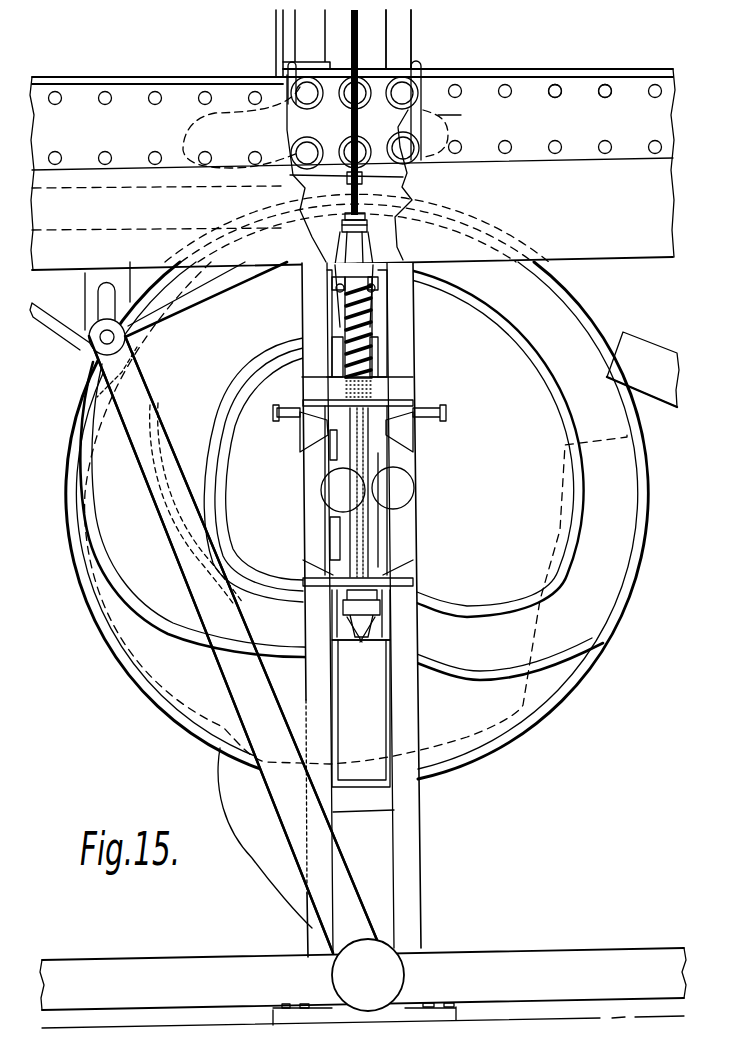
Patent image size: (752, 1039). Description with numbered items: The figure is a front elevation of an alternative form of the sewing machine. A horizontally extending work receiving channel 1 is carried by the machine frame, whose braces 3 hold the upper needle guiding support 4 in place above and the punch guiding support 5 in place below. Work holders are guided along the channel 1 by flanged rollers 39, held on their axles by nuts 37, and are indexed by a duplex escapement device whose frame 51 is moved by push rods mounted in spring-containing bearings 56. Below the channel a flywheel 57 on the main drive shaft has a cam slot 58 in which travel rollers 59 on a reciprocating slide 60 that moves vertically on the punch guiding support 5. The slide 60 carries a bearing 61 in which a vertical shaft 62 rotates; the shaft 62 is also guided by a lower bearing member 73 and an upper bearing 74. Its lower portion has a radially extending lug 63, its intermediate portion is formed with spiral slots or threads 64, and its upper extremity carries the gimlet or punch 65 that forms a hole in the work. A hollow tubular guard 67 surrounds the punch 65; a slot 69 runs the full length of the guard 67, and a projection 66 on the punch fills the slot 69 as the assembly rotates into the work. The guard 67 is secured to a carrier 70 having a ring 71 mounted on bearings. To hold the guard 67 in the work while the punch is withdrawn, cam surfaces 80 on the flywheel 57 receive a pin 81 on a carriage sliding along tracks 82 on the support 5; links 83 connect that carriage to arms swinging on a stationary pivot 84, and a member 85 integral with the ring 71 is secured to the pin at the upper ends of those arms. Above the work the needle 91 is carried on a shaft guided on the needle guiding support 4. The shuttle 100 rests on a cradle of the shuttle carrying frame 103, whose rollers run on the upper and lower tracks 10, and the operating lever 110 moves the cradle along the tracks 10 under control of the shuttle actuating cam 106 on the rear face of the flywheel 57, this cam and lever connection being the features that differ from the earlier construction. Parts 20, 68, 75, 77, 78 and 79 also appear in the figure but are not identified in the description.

The work receiving channel 1 is at (659, 113).
The braces 3 is at (190, 966).
The upper needle guiding support 4 is at (405, 31).
The punch guiding support 5 is at (333, 823).
The tracks 10 is at (655, 209).
The bracket plate 20 is at (236, 112).
The nuts 37 is at (556, 98).
The flanged rollers 39 is at (305, 85).
The escapement frame 51 is at (463, 119).
The bearings 56 is at (418, 68).
The flywheel 57 is at (115, 627).
The cam slot 58 is at (598, 604).
The rollers 59 is at (378, 645).
The reciprocating slide 60 is at (333, 693).
The bearing 61 is at (357, 643).
The vertical shaft 62 is at (362, 508).
The radially extending lug 63 is at (407, 447).
The spiral slots or threads 64 is at (373, 317).
The gimlet or punch 65 is at (419, 110).
The projection 66 is at (355, 122).
The hollow tubular guard 67 is at (402, 120).
The coupling nut 68 is at (362, 186).
The slot 69 is at (343, 128).
The carrier 70 is at (337, 230).
The ring 71 is at (368, 227).
The lower bearing member 73 is at (412, 579).
The upper bearing 74 is at (412, 400).
The cylinder 75 is at (388, 465).
The bearing block 77 is at (327, 452).
The pivot pin 78 is at (290, 422).
The roller 79 is at (345, 492).
The cam surfaces 80 is at (266, 370).
The pin 81 is at (327, 301).
The tracks 82 is at (383, 352).
The links 83 is at (390, 258).
The stationary pivot 84 is at (485, 395).
The member 85 is at (403, 207).
The needle 91 is at (359, 25).
The shuttle 100 is at (275, 197).
The shuttle carrying frame 103 is at (75, 290).
The shuttle actuating cam 106 is at (604, 448).
The operating lever 110 is at (177, 490).